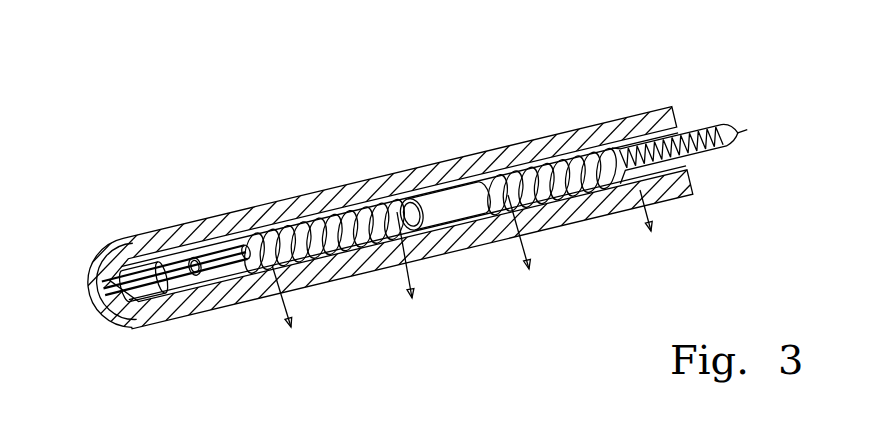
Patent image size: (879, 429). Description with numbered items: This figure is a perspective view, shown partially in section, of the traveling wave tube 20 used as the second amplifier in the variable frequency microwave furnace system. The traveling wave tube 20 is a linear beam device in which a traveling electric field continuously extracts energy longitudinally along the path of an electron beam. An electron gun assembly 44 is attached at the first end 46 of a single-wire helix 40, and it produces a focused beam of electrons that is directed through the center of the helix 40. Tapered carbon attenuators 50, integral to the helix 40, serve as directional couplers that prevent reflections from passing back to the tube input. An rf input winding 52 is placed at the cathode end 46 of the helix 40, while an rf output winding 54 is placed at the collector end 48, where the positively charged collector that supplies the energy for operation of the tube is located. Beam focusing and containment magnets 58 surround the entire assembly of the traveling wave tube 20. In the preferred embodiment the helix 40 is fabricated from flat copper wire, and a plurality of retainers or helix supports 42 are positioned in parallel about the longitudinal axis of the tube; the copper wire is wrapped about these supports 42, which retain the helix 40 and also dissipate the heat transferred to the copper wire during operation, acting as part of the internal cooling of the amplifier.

The traveling wave tube 20 is at (392, 215).
The single-wire helix 40 is at (386, 222).
The helix supports 42 is at (403, 216).
The electron gun assembly 44 is at (177, 273).
The first end 46 is at (430, 210).
The second end 48 is at (682, 150).
The tapered carbon attenuators 50 is at (445, 206).
The rf input winding 52 is at (290, 312).
The rf output winding 54 is at (648, 214).
The beam focusing and containment magnets 58 is at (279, 202).